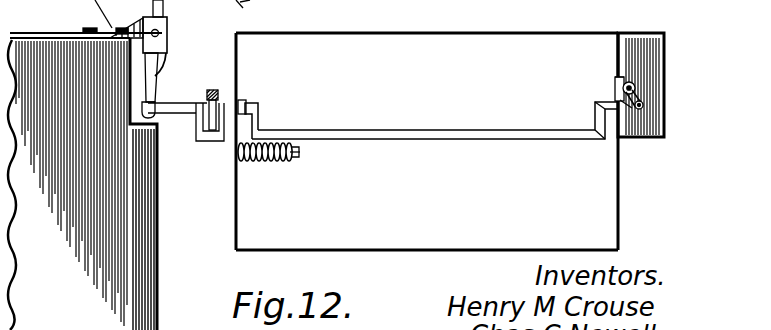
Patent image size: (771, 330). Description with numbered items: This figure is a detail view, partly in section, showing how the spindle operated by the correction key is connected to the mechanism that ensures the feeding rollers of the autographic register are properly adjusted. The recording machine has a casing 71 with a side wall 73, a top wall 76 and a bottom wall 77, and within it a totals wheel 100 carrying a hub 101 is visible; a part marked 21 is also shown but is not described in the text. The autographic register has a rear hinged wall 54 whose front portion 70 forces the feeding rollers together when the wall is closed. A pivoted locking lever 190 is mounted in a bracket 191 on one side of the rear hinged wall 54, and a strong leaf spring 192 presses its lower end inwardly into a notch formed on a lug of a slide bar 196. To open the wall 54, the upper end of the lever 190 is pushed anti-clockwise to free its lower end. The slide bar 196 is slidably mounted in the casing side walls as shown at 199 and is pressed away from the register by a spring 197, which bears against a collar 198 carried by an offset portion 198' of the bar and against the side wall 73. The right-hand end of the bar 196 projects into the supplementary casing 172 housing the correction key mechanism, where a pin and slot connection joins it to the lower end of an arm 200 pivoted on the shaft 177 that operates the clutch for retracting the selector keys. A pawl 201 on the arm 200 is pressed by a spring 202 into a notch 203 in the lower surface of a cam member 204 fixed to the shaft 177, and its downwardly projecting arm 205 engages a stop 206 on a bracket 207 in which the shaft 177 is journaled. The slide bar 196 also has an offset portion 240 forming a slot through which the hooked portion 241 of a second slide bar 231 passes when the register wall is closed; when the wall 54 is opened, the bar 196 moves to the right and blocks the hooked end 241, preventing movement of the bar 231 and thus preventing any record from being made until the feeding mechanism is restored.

The tank 21 is at (146, 232).
The front portion 70 is at (37, 34).
The rear hinged wall 54 is at (60, 34).
The locking lever 190 is at (166, 12).
The bracket 191 is at (168, 30).
The leaf spring 192 is at (160, 68).
The hooked portion 241 is at (204, 100).
The slide bar 231 is at (219, 92).
The offset portion 240 is at (200, 142).
The top wall 76 is at (545, 33).
The bottom wall 77 is at (418, 248).
The side wall 73 is at (235, 218).
The casing 71 is at (620, 201).
The supplementary casing 172 is at (665, 46).
The notch 203 is at (616, 78).
The bracket 207 is at (614, 88).
The shaft 177 is at (633, 86).
The cam member 204 is at (636, 92).
The spring 202 is at (640, 97).
The pawl 201 is at (644, 103).
The arm 200 is at (636, 108).
The slide bar 196 is at (458, 137).
The stop 206 is at (612, 106).
The downwardly projecting arm 205 is at (598, 131).
The slidable mounting 199 is at (246, 100).
The spring 197 is at (258, 163).
The collar 198 is at (324, 165).
The offset portion 198' is at (319, 153).
The hub 101 is at (240, 2).
The totals wheel 100 is at (243, 8).